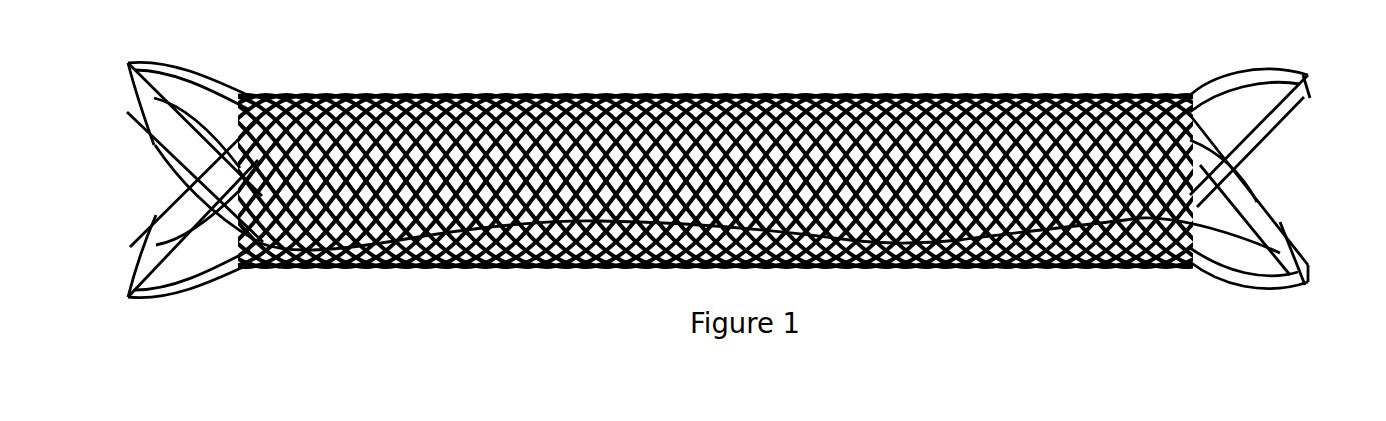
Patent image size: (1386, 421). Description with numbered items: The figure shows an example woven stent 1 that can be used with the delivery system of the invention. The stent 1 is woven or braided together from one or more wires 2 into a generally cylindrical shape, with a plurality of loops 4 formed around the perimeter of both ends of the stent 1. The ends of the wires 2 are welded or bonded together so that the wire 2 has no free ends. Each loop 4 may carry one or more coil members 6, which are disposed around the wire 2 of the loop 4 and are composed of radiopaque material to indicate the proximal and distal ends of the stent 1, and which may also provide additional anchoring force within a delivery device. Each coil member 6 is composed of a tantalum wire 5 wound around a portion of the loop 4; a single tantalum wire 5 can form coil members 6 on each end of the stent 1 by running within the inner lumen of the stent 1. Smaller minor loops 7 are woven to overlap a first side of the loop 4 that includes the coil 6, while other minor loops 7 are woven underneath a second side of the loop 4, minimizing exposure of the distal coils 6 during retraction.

The stent 1 is at (693, 205).
The wire 2 is at (460, 98).
The loop 4 is at (1270, 297).
The tantalum wire 5 is at (1077, 227).
The coil member 6 is at (1295, 277).
The minor loop 7 is at (1210, 138).